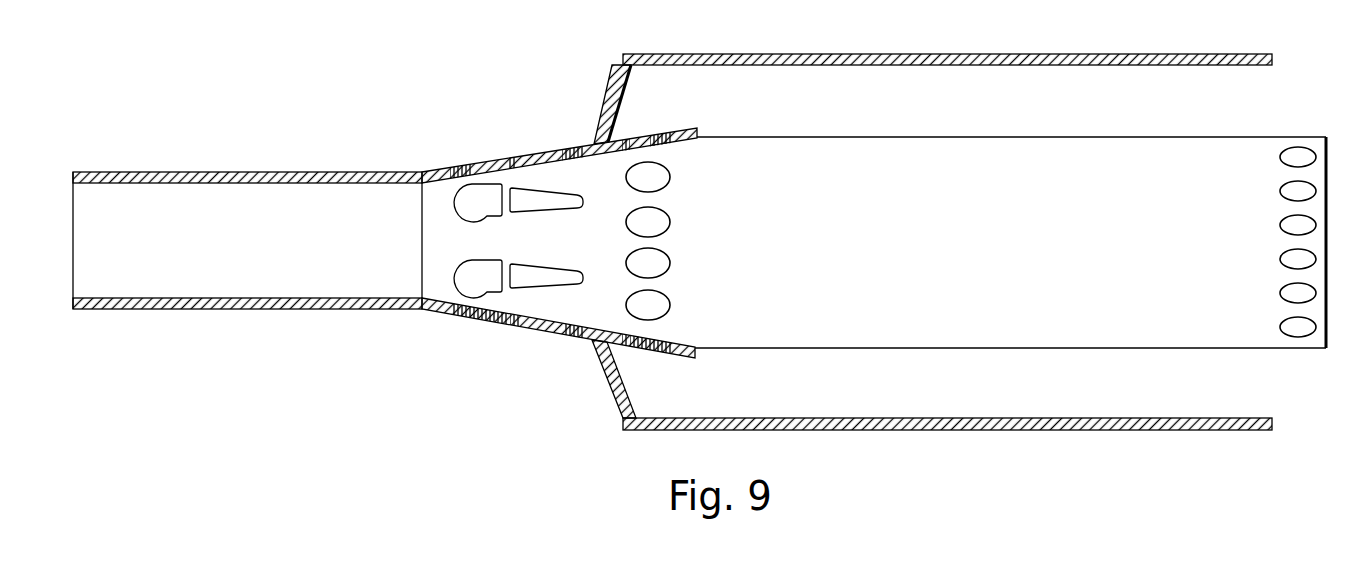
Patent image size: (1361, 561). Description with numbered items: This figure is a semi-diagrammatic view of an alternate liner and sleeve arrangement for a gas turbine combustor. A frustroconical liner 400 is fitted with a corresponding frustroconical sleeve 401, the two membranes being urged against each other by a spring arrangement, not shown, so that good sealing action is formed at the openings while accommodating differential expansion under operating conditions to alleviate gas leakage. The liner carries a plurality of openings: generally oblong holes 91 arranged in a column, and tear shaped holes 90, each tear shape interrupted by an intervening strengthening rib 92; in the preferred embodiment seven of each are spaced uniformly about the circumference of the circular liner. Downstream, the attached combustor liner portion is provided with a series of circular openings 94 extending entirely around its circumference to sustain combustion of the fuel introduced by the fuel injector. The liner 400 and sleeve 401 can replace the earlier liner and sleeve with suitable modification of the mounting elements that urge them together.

The tear shaped holes 90 is at (545, 188).
The oblong holes 91 is at (672, 220).
The strengthening ribs 92 is at (507, 266).
The circular openings 94 is at (1303, 140).
The frustroconical liner 400 is at (675, 147).
The sleeve 401 is at (579, 143).